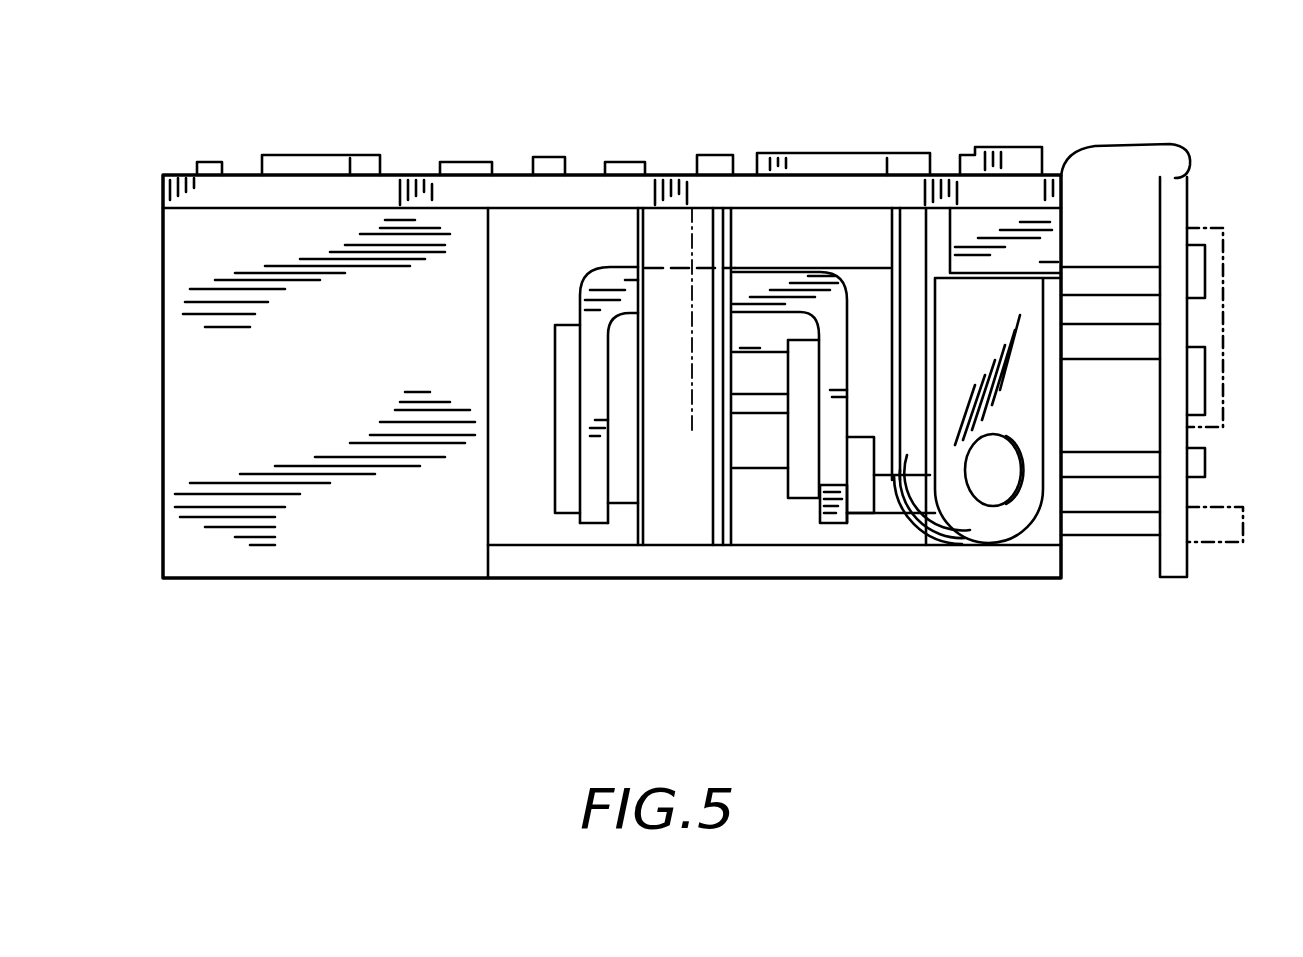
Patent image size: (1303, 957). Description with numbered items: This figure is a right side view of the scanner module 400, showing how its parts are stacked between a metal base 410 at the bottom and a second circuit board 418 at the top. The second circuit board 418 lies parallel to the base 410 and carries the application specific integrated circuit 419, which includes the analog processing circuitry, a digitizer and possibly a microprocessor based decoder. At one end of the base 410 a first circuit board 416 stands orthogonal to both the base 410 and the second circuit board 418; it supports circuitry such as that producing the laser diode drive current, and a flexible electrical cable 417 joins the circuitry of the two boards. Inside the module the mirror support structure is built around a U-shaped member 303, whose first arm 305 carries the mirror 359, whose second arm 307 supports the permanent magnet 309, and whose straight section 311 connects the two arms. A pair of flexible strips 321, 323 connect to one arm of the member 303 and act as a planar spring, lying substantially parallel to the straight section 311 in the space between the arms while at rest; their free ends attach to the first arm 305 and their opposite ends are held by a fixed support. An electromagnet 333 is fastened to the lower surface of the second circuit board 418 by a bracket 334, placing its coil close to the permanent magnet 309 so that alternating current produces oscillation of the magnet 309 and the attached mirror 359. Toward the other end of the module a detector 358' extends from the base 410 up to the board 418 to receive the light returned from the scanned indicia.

The scanner module 400 is at (1165, 122).
The second circuit board 418 is at (417, 175).
The application specific integrated circuit 419 is at (843, 153).
The flexible electrical cable 417 is at (1068, 163).
The first circuit board 416 is at (1187, 203).
The detector 358' is at (325, 436).
The metal base 410 is at (720, 580).
The straight section 311 is at (625, 275).
The mirror 359 is at (570, 513).
The first arm 305 is at (610, 513).
The U-shaped member 303 is at (745, 268).
The flexible strip 321 is at (740, 366).
The flexible strip 323 is at (757, 455).
The second arm 307 is at (833, 523).
The permanent magnet 309 is at (867, 515).
The electromagnet 333 is at (937, 533).
The bracket 334 is at (1060, 262).